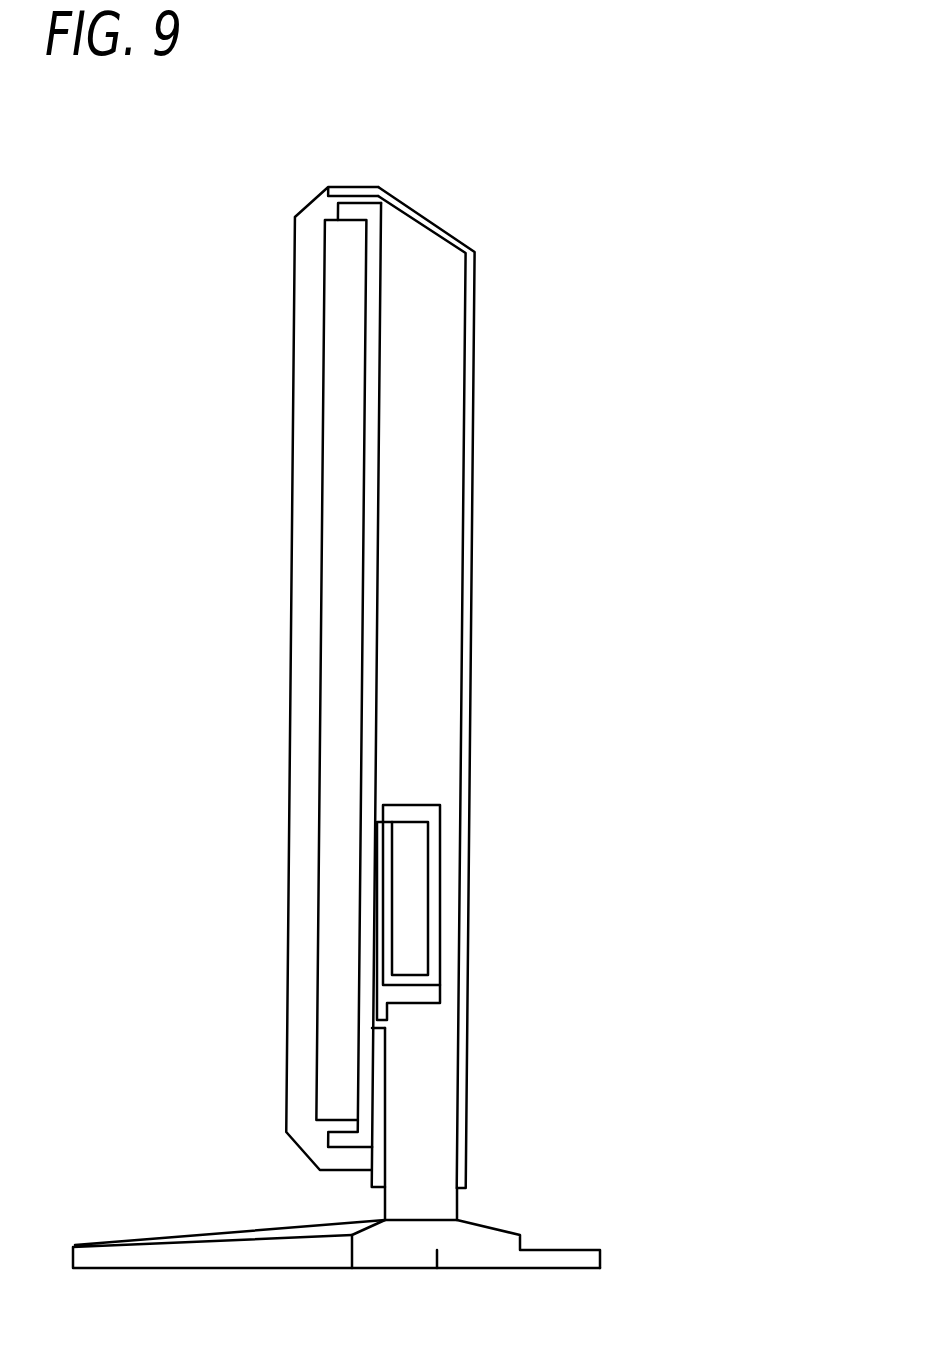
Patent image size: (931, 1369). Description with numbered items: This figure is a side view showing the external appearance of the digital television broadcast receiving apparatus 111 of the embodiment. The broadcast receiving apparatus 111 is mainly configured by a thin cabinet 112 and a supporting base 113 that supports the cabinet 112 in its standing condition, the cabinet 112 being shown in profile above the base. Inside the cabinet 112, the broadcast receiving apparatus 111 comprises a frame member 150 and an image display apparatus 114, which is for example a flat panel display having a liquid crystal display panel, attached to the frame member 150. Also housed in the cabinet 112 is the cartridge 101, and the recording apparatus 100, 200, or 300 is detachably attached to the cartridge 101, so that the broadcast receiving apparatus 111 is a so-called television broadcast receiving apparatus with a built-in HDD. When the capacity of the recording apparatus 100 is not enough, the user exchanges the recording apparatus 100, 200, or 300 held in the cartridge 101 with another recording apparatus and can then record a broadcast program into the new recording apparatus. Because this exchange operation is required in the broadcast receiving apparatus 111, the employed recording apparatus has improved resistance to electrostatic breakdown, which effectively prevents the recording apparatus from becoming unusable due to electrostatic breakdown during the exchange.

The broadcast receiving apparatus 111 is at (428, 137).
The cabinet 112 is at (473, 326).
The supporting base 113 is at (380, 1258).
The image display apparatus 114 is at (340, 442).
The frame member 150 is at (373, 512).
The cartridge 101 is at (428, 820).
The recording apparatus 100 is at (552, 898).
The recording apparatus 200 is at (410, 898).
The recording apparatus 300 is at (418, 897).